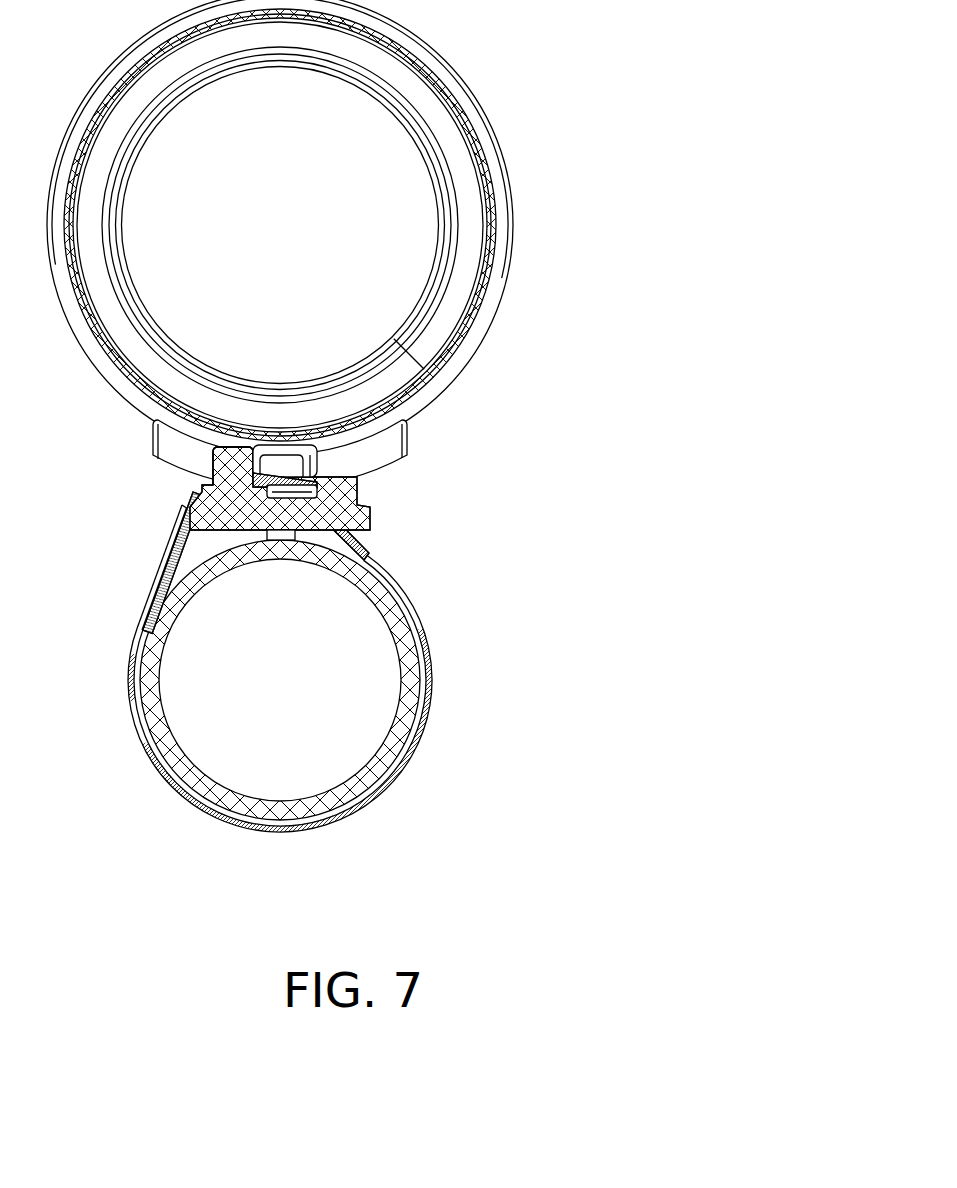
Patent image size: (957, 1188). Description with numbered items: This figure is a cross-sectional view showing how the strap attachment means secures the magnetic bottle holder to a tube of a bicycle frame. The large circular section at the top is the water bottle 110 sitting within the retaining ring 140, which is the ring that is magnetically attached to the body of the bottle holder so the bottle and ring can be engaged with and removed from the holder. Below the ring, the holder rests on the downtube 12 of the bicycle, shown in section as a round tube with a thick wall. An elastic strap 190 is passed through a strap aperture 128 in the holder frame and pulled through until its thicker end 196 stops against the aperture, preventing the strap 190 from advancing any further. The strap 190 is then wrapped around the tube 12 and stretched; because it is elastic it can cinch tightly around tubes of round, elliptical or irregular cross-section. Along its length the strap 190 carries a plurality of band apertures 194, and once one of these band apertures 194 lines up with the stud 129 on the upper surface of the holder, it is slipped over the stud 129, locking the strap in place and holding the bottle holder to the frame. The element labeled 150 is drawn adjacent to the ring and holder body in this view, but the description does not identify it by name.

The downtube 12 is at (397, 637).
The water bottle 110 is at (487, 265).
The strap aperture 128 is at (330, 537).
The stud 129 is at (223, 455).
The retaining ring 140 is at (470, 357).
The mounting lug 150 is at (410, 452).
The elastic strap 190 is at (432, 676).
The band aperture 194 is at (176, 531).
The thicker end 196 is at (317, 481).